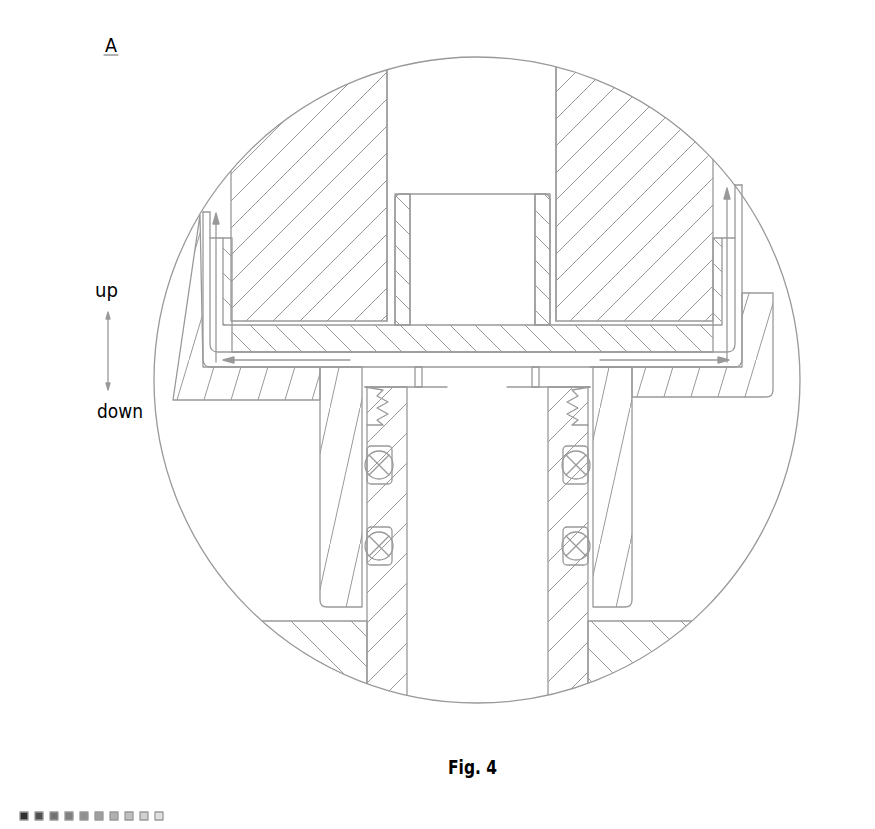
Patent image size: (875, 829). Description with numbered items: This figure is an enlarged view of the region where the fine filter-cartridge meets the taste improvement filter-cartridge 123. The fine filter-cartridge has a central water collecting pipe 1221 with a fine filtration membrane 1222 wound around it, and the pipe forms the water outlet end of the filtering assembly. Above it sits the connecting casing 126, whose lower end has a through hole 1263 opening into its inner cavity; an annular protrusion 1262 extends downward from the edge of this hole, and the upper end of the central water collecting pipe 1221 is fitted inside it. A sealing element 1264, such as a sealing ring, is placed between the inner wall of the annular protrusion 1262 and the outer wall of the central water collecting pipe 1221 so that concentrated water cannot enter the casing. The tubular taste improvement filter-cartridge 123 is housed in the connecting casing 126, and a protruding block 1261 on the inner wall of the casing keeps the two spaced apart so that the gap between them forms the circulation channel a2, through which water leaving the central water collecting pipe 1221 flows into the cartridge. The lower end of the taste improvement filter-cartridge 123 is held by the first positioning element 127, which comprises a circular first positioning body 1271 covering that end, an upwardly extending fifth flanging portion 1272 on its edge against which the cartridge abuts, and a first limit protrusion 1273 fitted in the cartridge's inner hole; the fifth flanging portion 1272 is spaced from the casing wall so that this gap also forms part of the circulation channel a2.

The taste improvement filter-cartridge 123 is at (318, 147).
The circulation channel a2 is at (573, 333).
The first positioning element 127 is at (405, 248).
The first positioning body 1271 is at (317, 337).
The fifth flanging portion 1272 is at (222, 270).
The first limit protrusion 1273 is at (405, 262).
The connecting casing 126 is at (502, 380).
The protruding block 1261 is at (652, 370).
The annular protrusion 1262 is at (337, 497).
The through hole 1263 is at (492, 377).
The sealing element 1264 is at (583, 456).
The central water collecting pipe 1221 is at (563, 633).
The fine filtration membrane 1222 is at (660, 628).